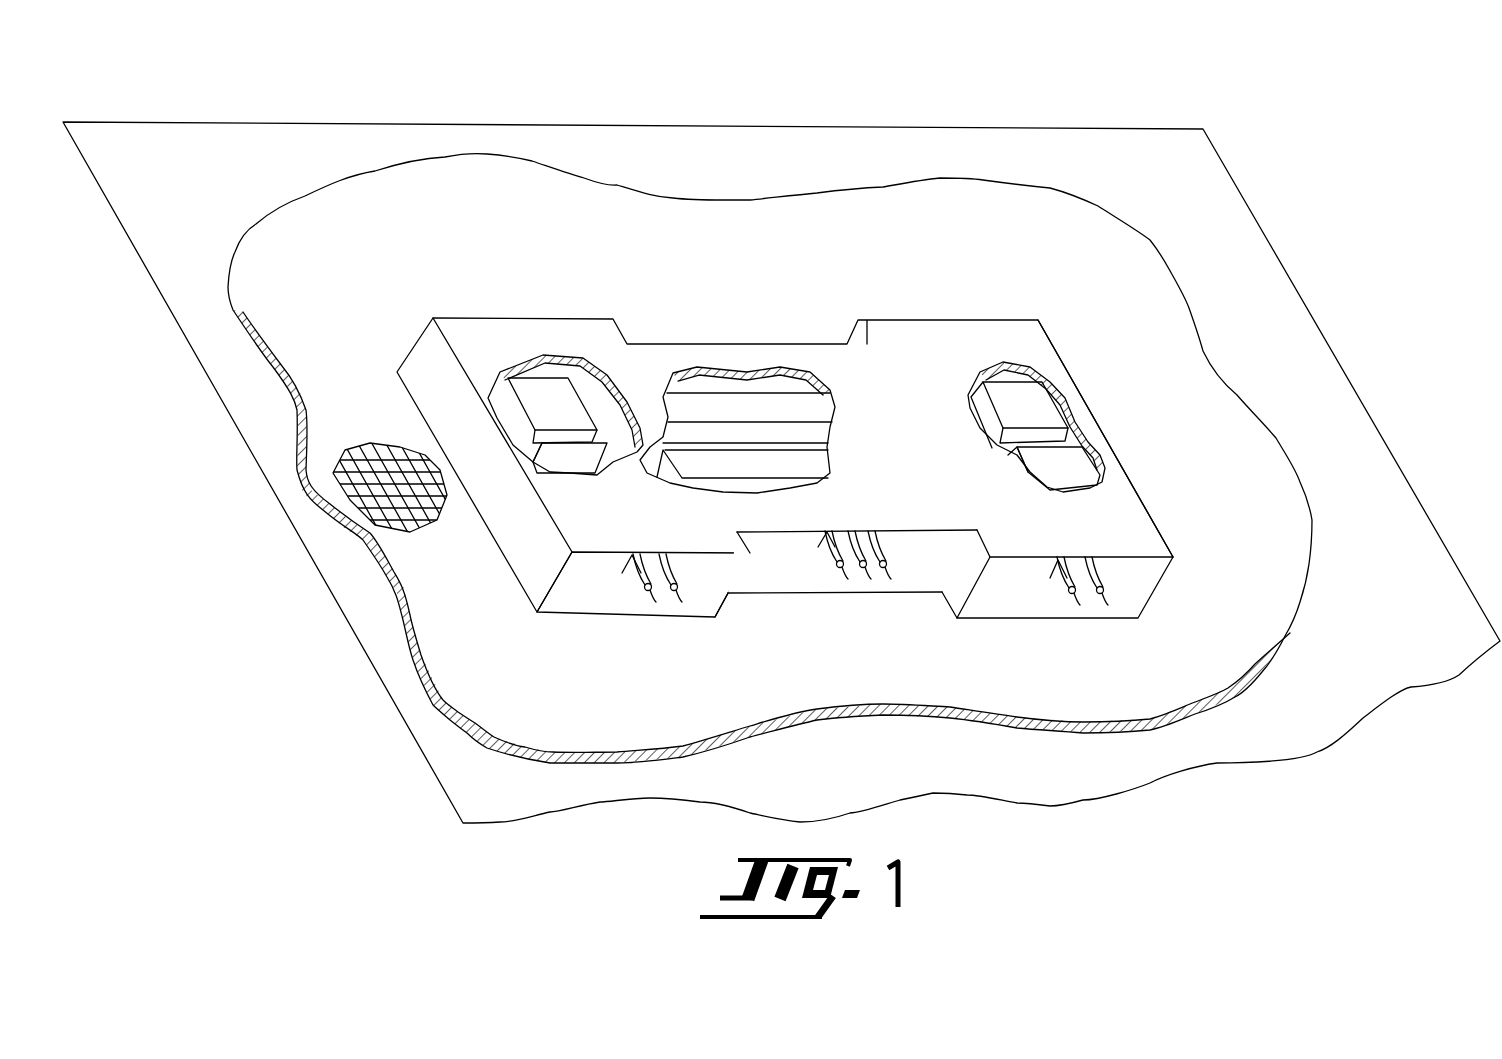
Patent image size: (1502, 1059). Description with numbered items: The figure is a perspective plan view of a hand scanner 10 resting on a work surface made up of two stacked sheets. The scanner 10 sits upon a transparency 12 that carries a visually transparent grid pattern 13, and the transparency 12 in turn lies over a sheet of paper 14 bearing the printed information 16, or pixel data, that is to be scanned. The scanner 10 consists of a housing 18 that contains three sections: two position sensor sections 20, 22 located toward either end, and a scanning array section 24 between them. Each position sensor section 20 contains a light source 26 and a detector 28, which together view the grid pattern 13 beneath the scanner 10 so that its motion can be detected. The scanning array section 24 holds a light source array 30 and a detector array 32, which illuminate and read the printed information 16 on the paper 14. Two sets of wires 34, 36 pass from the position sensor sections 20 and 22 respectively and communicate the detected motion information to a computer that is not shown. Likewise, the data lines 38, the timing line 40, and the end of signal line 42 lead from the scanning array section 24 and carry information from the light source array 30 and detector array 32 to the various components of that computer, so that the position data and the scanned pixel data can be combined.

The scanner 10 is at (718, 414).
The transparency 12 is at (1247, 663).
The grid pattern 13 is at (367, 513).
The sheet of paper 14 is at (485, 122).
The printed information 16 is at (605, 273).
The housing 18 is at (1038, 343).
The position sensor section 20 is at (490, 572).
The position sensor section 22 is at (1150, 535).
The scanning array section 24 is at (750, 578).
The light source 26 is at (565, 463).
The detector 28 is at (497, 372).
The light source array 30 is at (747, 470).
The detector array 32 is at (562, 405).
The set of wires 34 is at (667, 590).
The set of wires 36 is at (1113, 593).
The data lines 38 is at (850, 598).
The timing line 40 is at (900, 568).
The end of signal line 42 is at (930, 594).